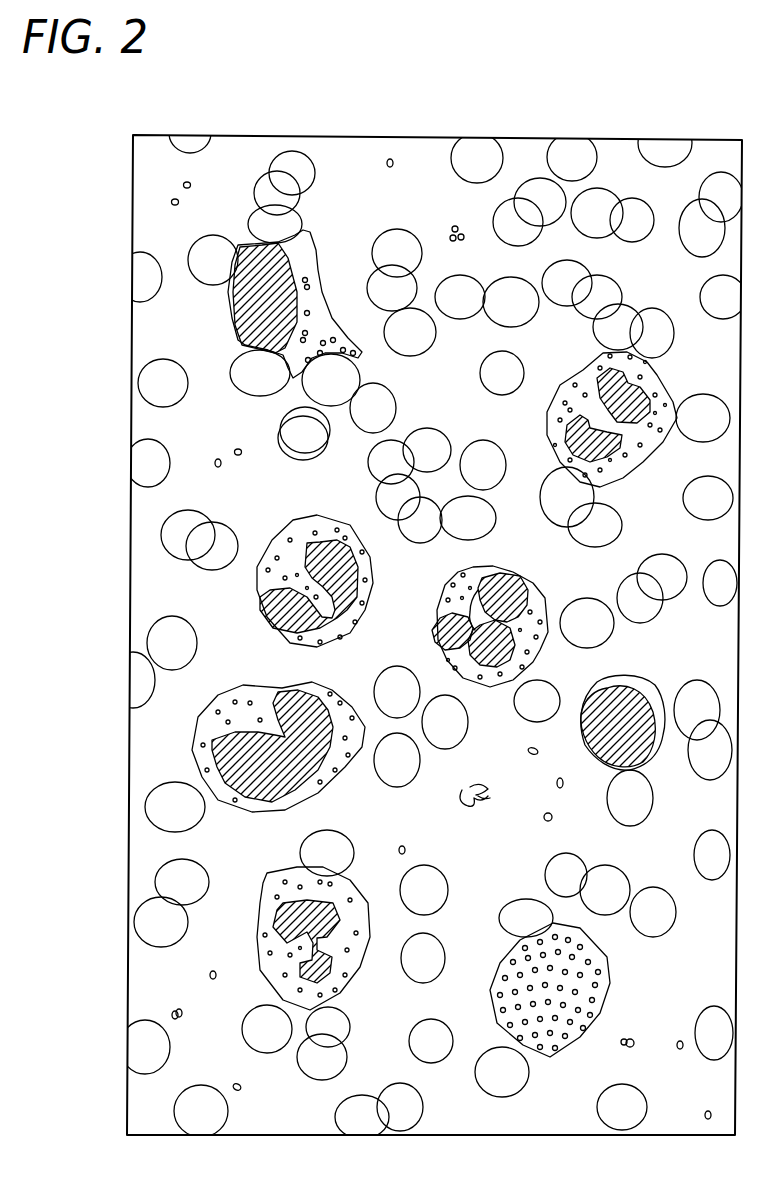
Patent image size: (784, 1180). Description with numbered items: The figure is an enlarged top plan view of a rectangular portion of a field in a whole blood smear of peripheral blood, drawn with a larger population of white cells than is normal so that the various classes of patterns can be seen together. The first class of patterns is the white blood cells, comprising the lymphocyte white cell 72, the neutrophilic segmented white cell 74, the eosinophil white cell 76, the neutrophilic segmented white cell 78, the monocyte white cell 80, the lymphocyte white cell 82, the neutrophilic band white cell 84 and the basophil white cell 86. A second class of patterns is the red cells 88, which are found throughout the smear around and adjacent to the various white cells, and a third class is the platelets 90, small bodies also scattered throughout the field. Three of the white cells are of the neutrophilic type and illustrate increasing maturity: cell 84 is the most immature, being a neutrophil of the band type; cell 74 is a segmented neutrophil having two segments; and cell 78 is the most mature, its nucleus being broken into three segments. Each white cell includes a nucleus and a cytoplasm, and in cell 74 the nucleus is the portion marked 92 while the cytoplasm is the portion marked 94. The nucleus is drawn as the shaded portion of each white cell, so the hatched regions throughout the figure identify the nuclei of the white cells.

The lymphocyte white cell 72 is at (357, 268).
The neutrophilic segmented white cell 74 is at (624, 423).
The eosinophil white cell 76 is at (300, 505).
The neutrophilic segmented white cell 78 is at (538, 565).
The monocyte white cell 80 is at (216, 690).
The lymphocyte white cell 82 is at (683, 647).
The neutrophilic band white cell 84 is at (258, 885).
The basophil white cell 86 is at (622, 1000).
The red cells 88 is at (175, 403).
The platelets 90 is at (193, 192).
The nucleus 92 is at (633, 390).
The cytoplasm 94 is at (630, 467).